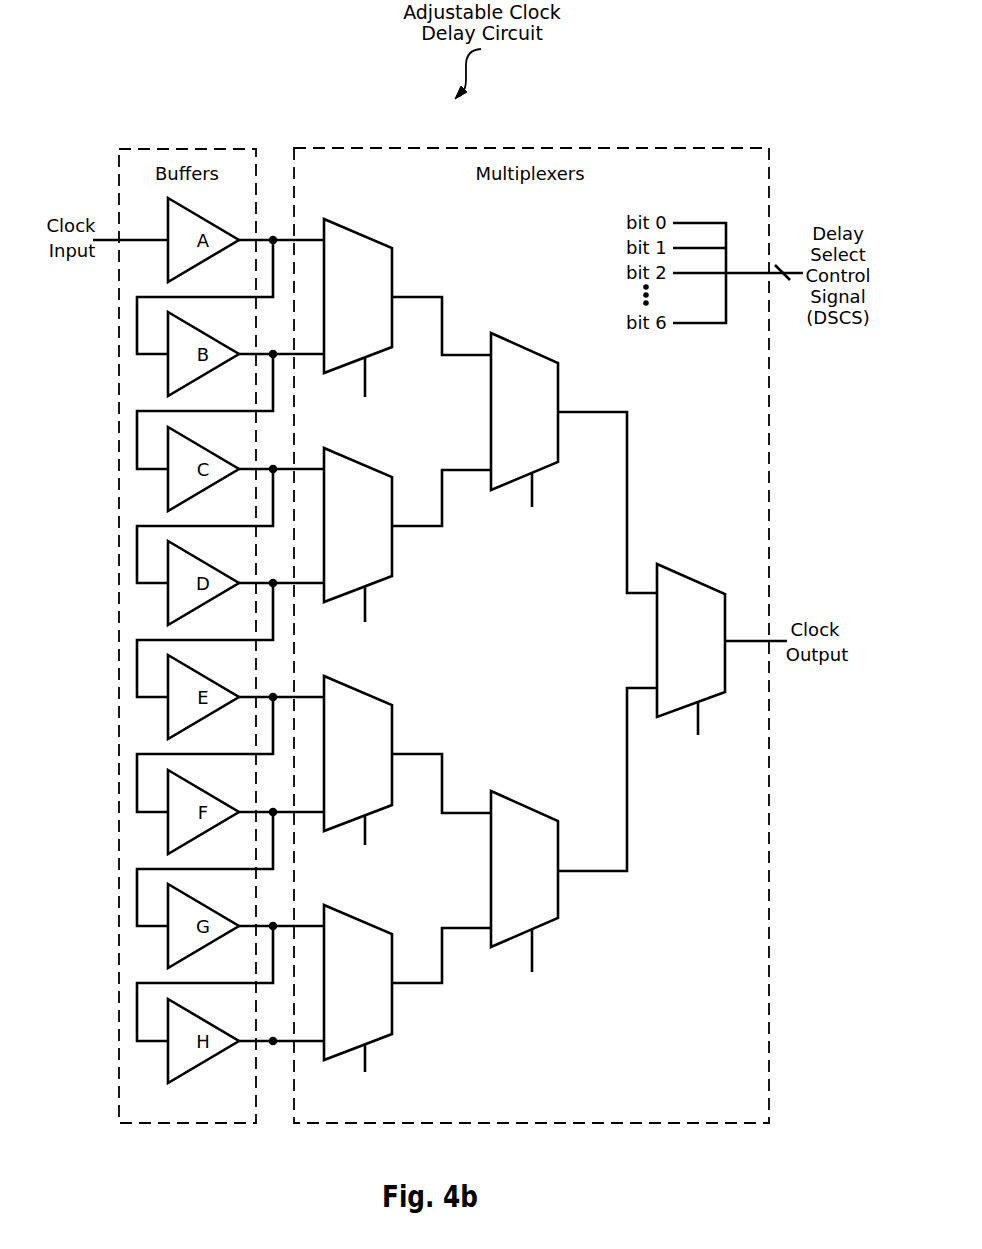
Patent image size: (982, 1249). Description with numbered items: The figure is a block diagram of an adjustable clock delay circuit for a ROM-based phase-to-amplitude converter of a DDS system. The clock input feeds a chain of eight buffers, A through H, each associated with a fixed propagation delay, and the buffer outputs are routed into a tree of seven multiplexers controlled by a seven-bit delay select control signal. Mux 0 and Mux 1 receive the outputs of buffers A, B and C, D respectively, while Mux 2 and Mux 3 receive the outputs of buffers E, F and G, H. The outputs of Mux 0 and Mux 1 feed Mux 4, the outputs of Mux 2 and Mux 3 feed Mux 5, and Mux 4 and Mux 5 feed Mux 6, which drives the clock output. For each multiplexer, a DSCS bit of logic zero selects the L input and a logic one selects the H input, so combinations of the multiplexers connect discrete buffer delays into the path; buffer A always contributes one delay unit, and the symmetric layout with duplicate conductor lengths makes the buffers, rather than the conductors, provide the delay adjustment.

The Mux 0 is at (366, 333).
The Mux 1 is at (366, 560).
The Mux 2 is at (366, 786).
The Mux 3 is at (366, 1014).
The Mux 4 is at (533, 446).
The Mux 5 is at (533, 909).
The Mux 6 is at (700, 674).